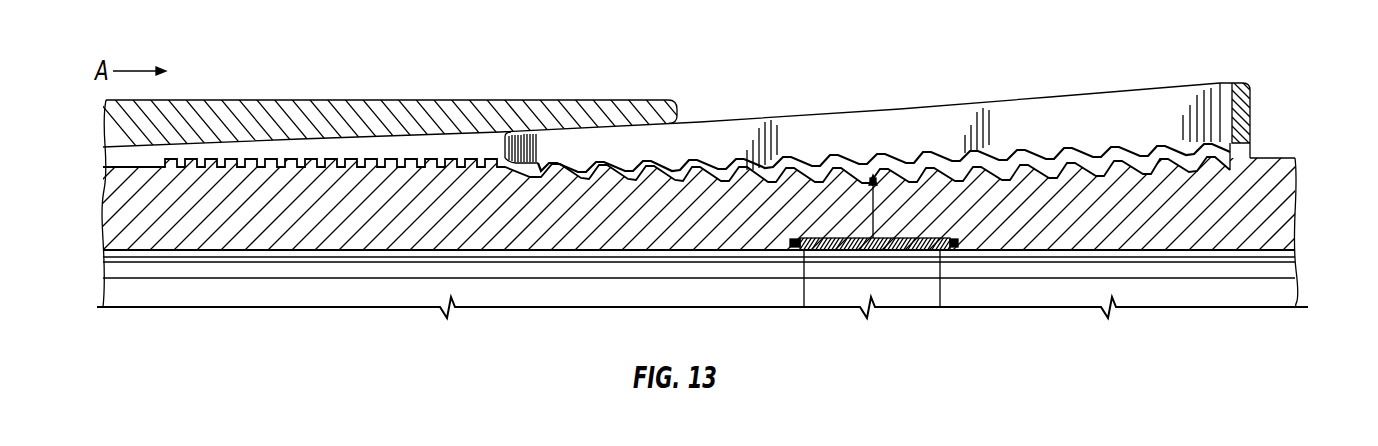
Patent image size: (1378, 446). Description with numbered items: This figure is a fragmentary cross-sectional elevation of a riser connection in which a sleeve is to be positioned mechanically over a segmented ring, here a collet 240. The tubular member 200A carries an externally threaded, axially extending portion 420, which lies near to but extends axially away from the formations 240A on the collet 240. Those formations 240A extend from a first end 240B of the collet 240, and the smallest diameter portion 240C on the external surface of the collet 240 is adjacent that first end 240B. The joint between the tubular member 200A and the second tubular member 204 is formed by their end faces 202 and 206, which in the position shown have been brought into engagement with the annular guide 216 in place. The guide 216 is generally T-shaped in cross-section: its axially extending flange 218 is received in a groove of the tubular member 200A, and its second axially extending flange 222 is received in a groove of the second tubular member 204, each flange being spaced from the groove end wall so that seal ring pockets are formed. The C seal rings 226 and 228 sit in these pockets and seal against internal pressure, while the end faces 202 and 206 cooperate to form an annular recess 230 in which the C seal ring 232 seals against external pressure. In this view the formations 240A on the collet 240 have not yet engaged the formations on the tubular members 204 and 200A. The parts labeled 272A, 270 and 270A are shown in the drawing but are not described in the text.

The upper housing member 272A is at (290, 84).
The collet 240 is at (1191, 66).
The formations 240A is at (710, 167).
The first end 240B is at (503, 157).
The smallest diameter portion 240C is at (553, 143).
The upper surface of wedge 270A is at (620, 133).
The wedge top surface 270 is at (1096, 90).
The annular recess 230 is at (893, 183).
The C seal ring 232 is at (874, 180).
The end face 206 is at (871, 230).
The end face 202 is at (876, 232).
The C seal ring 226 is at (795, 241).
The C seal ring 228 is at (957, 245).
The axially extending flange 218 is at (802, 251).
The second axially extending flange 222 is at (944, 251).
The annular guide 216 is at (897, 272).
The tubular member 200A is at (334, 270).
The second tubular member 204 is at (1265, 208).
The externally threaded portion 420 is at (258, 165).